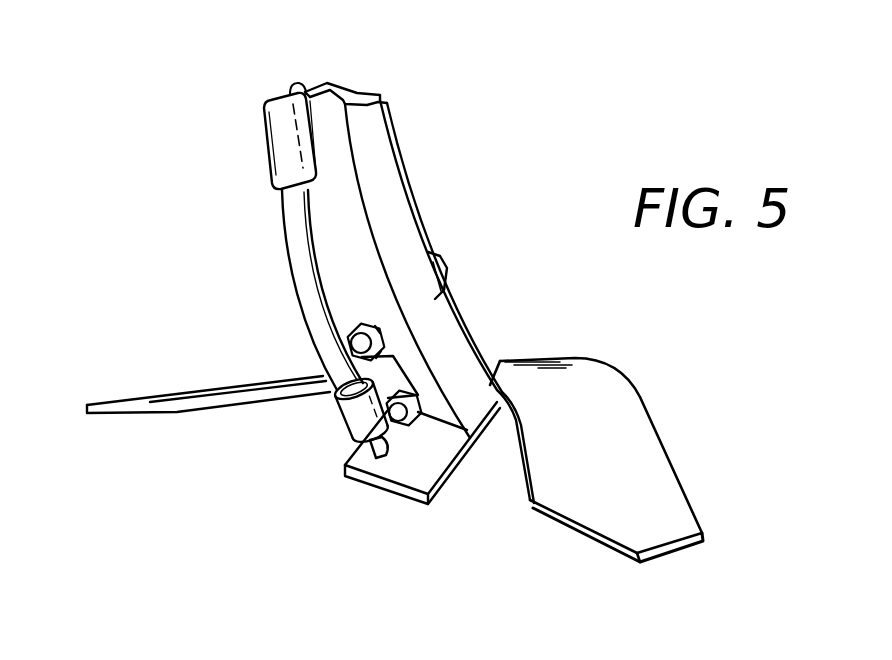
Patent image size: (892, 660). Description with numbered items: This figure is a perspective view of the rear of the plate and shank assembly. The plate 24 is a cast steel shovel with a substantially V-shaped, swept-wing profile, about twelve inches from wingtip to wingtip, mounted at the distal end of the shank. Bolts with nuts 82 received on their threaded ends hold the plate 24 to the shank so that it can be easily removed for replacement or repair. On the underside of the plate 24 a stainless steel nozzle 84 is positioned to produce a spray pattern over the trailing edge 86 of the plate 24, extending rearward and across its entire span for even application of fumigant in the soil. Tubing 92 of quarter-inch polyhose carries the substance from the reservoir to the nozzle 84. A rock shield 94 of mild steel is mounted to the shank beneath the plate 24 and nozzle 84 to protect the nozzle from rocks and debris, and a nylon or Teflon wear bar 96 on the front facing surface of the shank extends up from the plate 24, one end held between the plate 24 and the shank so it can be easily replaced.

The plate 24 is at (610, 387).
The nuts 82 is at (420, 387).
The nozzle 84 is at (367, 438).
The trailing edge 86 is at (203, 407).
The tubing 92 is at (296, 240).
The rock shield 94 is at (398, 490).
The wear bar 96 is at (410, 197).